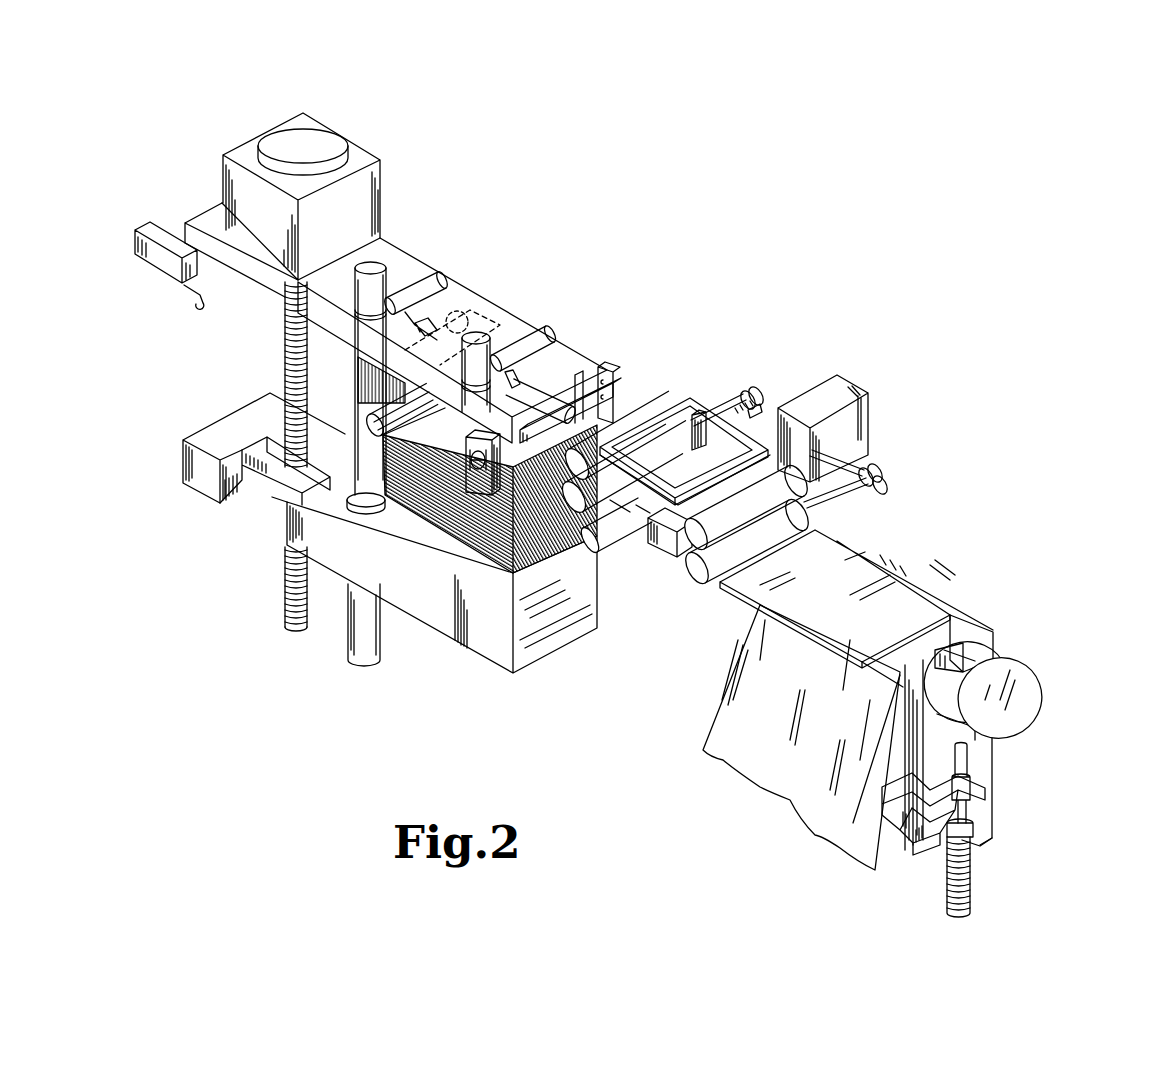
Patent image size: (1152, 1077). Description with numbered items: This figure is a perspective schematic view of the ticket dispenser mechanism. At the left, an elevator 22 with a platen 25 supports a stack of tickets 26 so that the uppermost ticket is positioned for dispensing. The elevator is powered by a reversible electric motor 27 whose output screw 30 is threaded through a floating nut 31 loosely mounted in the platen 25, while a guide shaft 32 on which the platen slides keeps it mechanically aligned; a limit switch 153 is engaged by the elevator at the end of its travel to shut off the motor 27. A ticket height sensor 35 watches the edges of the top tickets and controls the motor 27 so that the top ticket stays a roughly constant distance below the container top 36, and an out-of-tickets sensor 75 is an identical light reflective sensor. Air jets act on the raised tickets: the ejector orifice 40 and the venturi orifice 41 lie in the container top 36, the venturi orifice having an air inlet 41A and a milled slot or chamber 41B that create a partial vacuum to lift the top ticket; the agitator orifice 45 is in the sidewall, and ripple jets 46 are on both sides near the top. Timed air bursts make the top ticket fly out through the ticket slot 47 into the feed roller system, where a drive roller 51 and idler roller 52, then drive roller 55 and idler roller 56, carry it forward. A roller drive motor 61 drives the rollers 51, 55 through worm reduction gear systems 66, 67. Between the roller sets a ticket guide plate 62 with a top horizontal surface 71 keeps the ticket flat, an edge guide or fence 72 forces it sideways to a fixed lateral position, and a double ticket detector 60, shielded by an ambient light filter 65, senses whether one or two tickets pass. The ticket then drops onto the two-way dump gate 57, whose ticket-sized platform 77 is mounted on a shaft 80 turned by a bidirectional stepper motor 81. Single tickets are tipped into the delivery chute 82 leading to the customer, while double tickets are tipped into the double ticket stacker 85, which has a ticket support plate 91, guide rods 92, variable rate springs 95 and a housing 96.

The elevator 22 is at (463, 650).
The platen 25 is at (598, 616).
The stack of tickets 26 is at (433, 515).
The reversible electric motor 27 is at (382, 180).
The output screw 30 is at (286, 333).
The floating nut 31 is at (272, 480).
The guide shaft 32 is at (366, 662).
The ticket height sensor 35 is at (370, 426).
The container top 36 is at (487, 303).
The ejector orifice 40 is at (437, 300).
The venturi orifice 41 is at (520, 382).
The air inlet 41A is at (510, 372).
The slot or chamber 41B is at (585, 378).
The agitator orifice 45 is at (358, 364).
The ripple jets 46 is at (484, 498).
The ticket slot 47 is at (600, 400).
The drive roller 51 is at (578, 505).
The idler roller 52 is at (565, 472).
The drive roller 55 is at (707, 576).
The idler roller 56 is at (692, 545).
The two-way dump gate 57 is at (958, 572).
The double ticket detector 60 is at (622, 523).
The roller drive motor 61 is at (864, 397).
The ticket guide plate 62 is at (665, 545).
The ambient light filter 65 is at (697, 414).
The worm reduction gear system 66 is at (766, 394).
The worm reduction gear system 67 is at (892, 477).
The top horizontal surface 71 is at (685, 491).
The edge guide or fence 72 is at (806, 511).
The out-of-tickets sensor 75 is at (487, 343).
The ticket-sized platform 77 is at (856, 599).
The shaft 80 is at (975, 653).
The bidirectional stepper motor 81 is at (1041, 691).
The delivery chute 82 is at (801, 737).
The double ticket stacker 85 is at (1042, 633).
The ticket support plate 91 is at (977, 797).
The guide rods 92 is at (969, 762).
The variable rate springs 95 is at (972, 881).
The housing 96 is at (986, 831).
The limit switch 153 is at (146, 236).